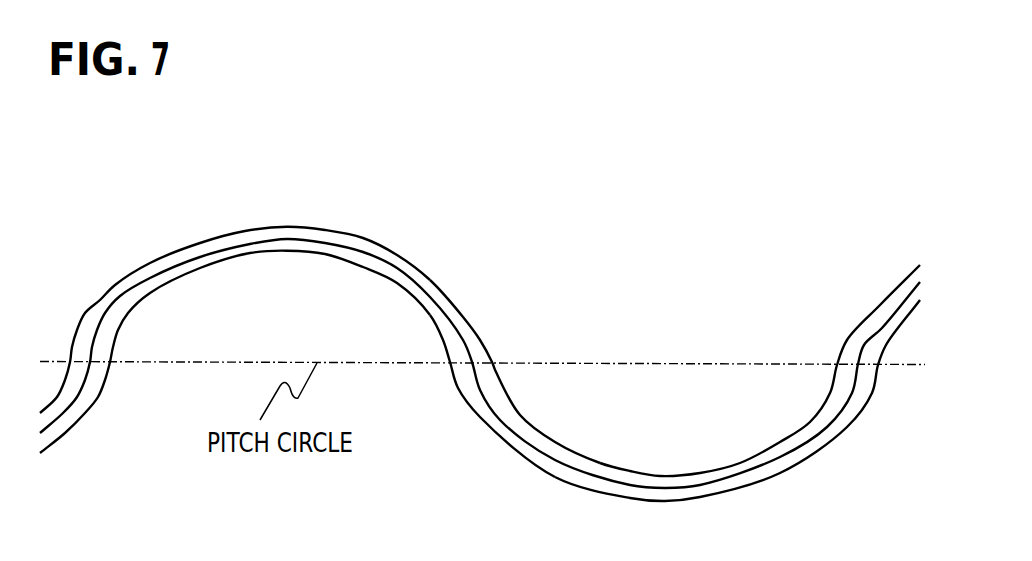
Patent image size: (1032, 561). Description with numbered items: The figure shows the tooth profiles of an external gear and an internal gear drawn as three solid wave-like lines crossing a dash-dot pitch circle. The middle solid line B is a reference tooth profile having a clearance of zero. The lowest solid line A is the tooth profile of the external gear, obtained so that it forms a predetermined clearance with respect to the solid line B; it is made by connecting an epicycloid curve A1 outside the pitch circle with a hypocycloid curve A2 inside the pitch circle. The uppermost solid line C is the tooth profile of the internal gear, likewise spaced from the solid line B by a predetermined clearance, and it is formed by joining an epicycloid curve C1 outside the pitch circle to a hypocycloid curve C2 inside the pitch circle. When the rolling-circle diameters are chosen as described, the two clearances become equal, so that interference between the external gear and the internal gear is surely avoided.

The solid line C is at (447, 298).
The solid line B is at (465, 338).
The solid line A is at (446, 348).
The curve C1 is at (186, 248).
The curve A1 is at (211, 266).
The curve C2 is at (657, 476).
The curve A2 is at (585, 486).